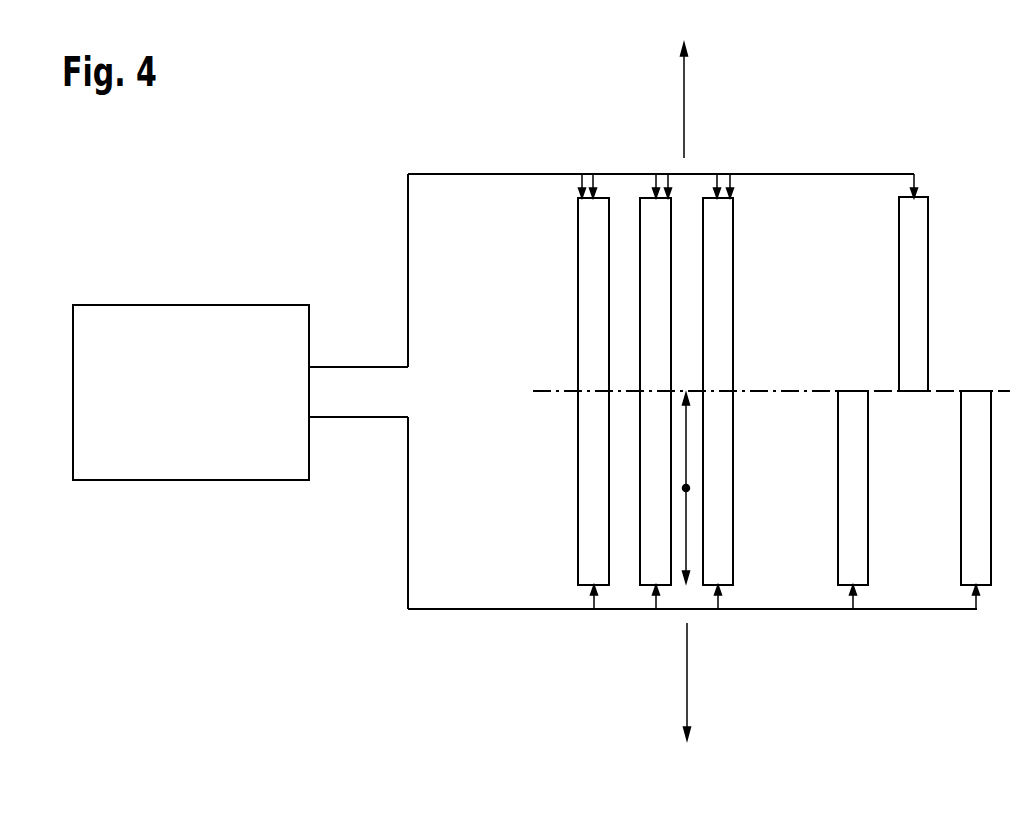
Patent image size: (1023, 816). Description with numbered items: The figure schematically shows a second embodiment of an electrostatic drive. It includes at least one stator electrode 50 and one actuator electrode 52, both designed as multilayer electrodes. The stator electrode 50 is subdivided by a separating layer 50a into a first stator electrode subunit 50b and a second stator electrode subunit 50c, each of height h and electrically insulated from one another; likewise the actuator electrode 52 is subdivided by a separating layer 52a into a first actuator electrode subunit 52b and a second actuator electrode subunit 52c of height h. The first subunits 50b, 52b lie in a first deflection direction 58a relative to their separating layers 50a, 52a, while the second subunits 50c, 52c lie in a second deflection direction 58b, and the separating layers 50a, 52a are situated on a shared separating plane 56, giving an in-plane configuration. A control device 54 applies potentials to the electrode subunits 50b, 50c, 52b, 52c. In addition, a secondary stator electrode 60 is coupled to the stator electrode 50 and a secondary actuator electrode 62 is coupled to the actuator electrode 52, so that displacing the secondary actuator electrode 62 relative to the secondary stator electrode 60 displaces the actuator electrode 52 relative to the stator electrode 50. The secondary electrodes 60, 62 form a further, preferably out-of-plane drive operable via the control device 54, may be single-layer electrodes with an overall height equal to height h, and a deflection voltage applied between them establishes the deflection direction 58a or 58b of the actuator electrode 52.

The stator electrode 50 is at (656, 336).
The separating layer 50a is at (590, 391).
The first stator electrode subunit 50b is at (590, 524).
The second stator electrode subunit 50c is at (590, 330).
The actuator electrode 52 is at (727, 337).
The separating layer 52a is at (660, 391).
The first actuator electrode subunit 52b is at (660, 552).
The second actuator electrode subunit 52c is at (658, 262).
The control device 54 is at (209, 445).
The shared separating plane 56 is at (537, 391).
The first deflection direction 58a is at (687, 673).
The second deflection direction 58b is at (684, 85).
The secondary stator electrode 60 is at (970, 435).
The secondary actuator electrode 62 is at (920, 323).
The height h is at (688, 490).